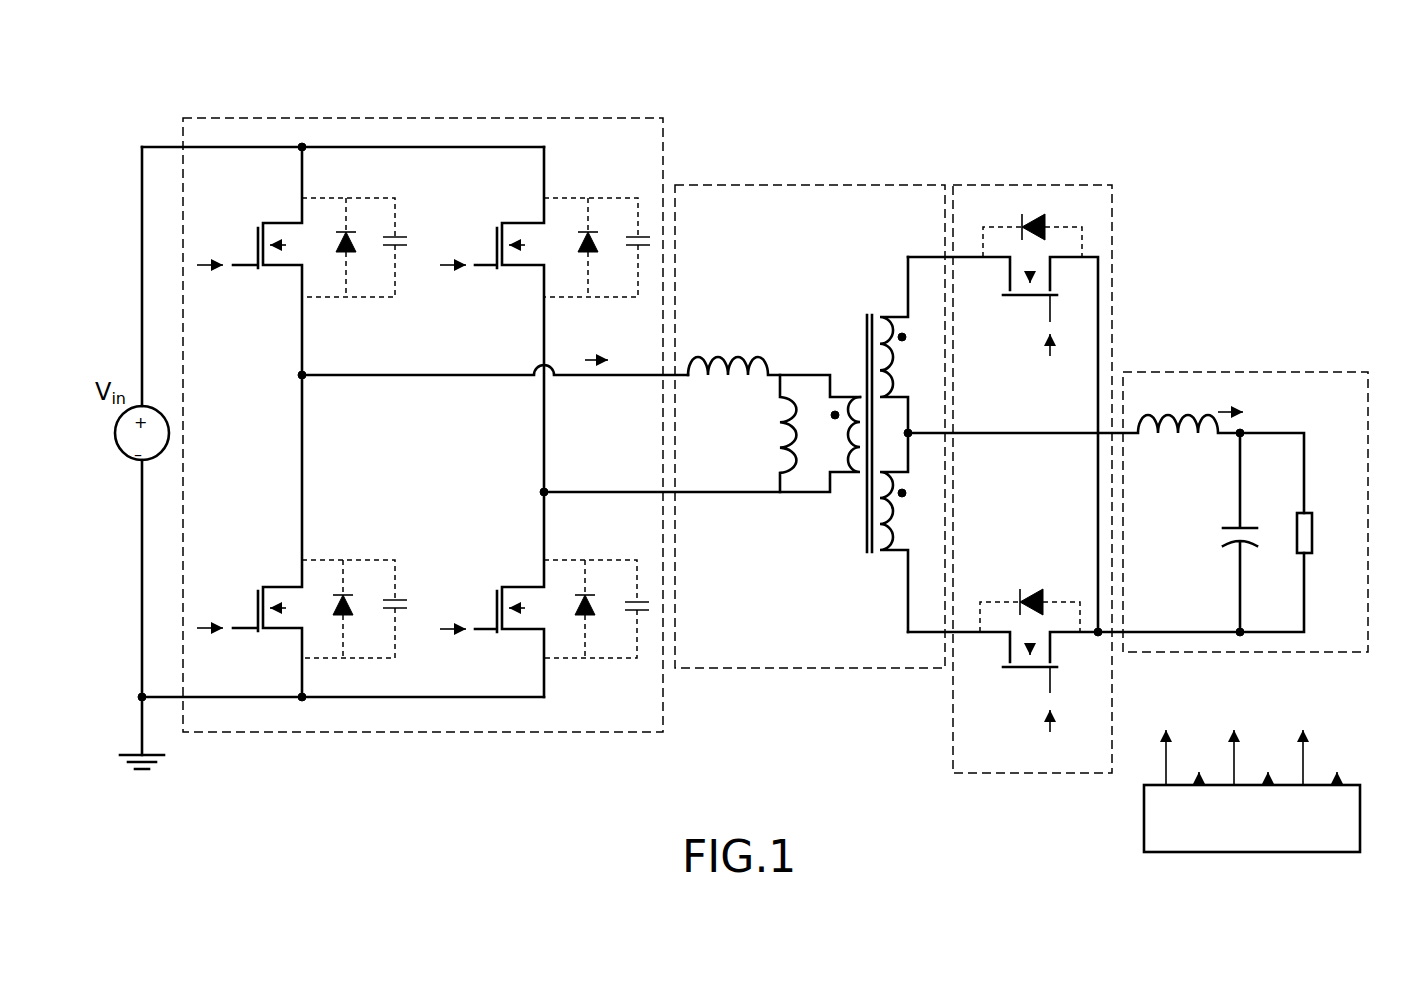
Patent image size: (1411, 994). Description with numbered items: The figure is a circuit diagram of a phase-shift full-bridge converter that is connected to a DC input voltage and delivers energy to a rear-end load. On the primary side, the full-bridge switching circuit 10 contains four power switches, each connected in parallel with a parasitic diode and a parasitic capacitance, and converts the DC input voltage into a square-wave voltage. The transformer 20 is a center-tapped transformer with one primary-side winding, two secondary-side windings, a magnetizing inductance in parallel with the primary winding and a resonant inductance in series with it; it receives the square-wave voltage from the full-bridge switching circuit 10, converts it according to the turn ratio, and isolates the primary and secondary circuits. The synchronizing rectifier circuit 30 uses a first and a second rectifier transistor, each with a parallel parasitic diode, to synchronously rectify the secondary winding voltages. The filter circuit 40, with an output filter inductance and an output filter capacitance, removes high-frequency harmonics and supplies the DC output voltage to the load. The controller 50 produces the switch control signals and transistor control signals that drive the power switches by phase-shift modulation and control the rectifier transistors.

The full-bridge switching circuit 10 is at (528, 130).
The transformer 20 is at (726, 193).
The synchronizing rectifier circuit 30 is at (1068, 183).
The filter circuit 40 is at (1316, 393).
The controller 50 is at (1160, 820).